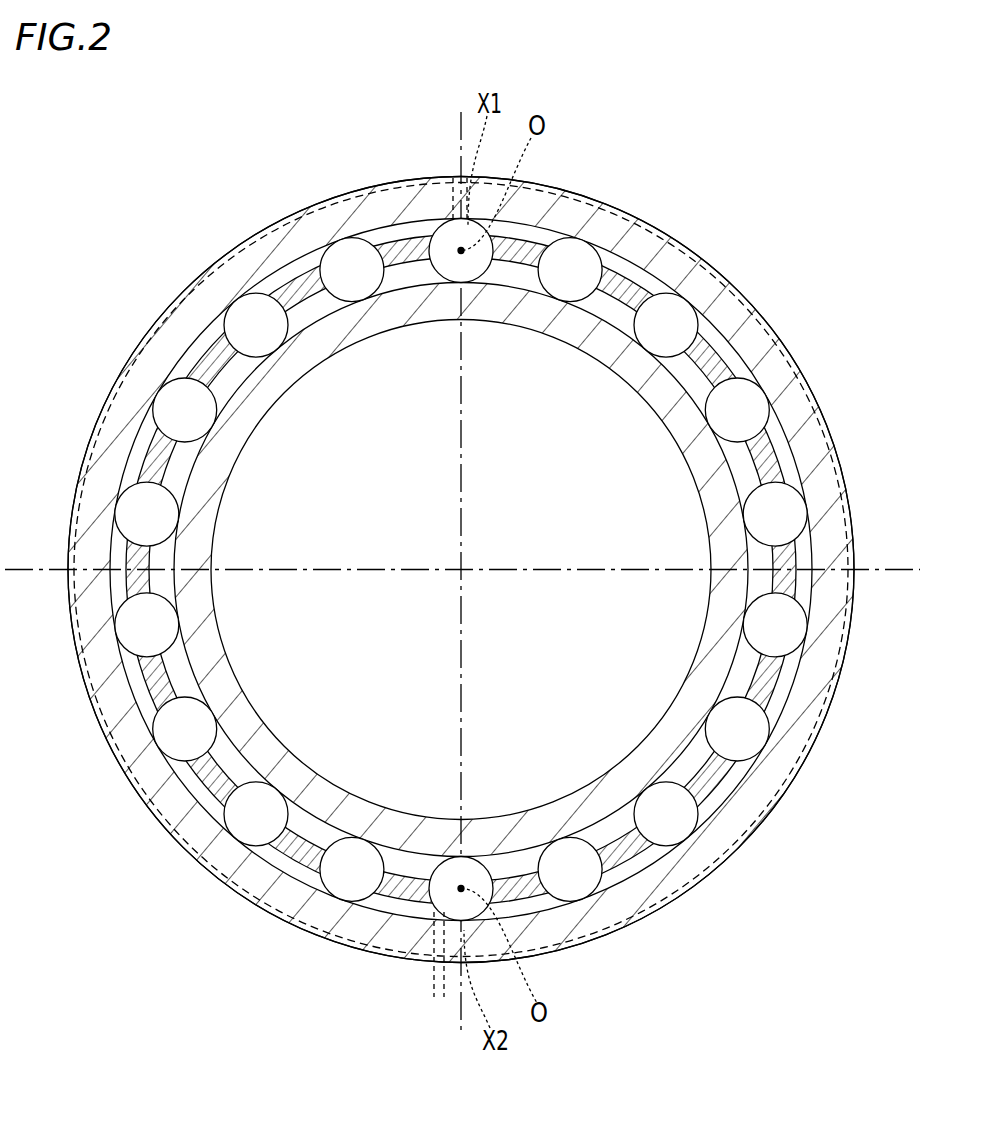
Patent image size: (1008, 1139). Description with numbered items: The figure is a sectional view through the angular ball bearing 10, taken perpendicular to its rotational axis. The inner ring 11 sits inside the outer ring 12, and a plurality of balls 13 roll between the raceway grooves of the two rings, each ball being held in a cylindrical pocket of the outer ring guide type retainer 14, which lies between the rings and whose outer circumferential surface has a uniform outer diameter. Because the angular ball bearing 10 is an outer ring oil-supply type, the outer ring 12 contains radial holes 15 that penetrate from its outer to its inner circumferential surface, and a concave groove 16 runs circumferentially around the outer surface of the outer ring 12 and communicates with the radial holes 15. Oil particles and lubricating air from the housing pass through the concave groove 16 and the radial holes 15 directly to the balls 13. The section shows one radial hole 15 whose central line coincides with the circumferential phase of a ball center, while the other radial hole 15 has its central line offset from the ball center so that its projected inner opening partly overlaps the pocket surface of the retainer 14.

The angular ball bearing 10 is at (206, 266).
The inner ring 11 is at (663, 750).
The outer ring 12 is at (800, 715).
The ball 13 is at (678, 312).
The retainer 14 is at (770, 460).
The radial hole 15 is at (452, 178).
The concave groove 16 is at (678, 243).